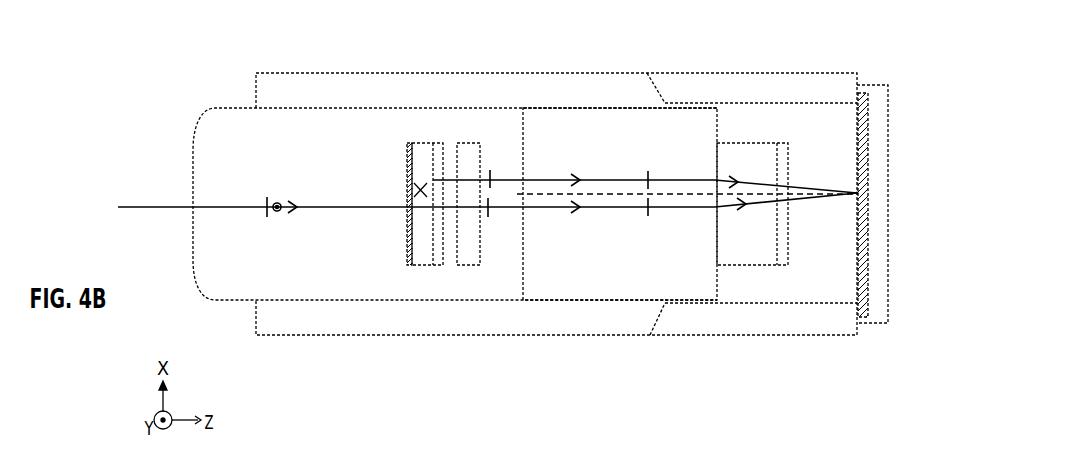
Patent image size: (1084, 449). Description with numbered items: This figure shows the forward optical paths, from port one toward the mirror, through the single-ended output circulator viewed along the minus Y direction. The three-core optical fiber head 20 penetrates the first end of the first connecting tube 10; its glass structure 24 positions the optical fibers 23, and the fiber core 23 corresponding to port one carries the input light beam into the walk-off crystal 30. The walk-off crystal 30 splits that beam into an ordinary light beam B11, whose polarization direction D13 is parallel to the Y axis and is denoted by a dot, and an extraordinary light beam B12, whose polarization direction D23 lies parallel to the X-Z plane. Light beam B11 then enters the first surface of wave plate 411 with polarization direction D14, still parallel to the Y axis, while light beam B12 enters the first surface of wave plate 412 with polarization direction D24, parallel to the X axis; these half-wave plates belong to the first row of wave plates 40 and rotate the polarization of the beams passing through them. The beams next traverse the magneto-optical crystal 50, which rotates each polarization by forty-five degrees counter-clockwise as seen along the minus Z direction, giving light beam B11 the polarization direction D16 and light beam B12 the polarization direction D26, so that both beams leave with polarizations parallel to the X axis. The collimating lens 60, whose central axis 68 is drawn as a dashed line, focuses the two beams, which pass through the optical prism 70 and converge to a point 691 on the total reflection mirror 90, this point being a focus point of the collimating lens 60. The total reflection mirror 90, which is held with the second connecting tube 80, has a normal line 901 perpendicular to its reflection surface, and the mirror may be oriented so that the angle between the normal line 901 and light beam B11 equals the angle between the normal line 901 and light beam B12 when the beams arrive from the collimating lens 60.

The first connecting tube 10 is at (387, 92).
The three-core optical fiber head 20 is at (302, 272).
The optical fibers 23 is at (233, 204).
The glass structure 24 is at (260, 145).
The walk-off crystal 30 is at (410, 270).
The wave plates 40 is at (437, 267).
The magneto-optical crystal 50 is at (470, 260).
The collimating lens 60 is at (560, 263).
The central axis 68 is at (615, 193).
The optical prism 70 is at (748, 252).
The second connecting tube 80 is at (775, 97).
The total reflection mirror 90 is at (878, 117).
The wave plate 411 is at (443, 240).
The wave plate 412 is at (440, 157).
The point 691 is at (860, 197).
The normal line 901 is at (758, 197).
The light beam B11 is at (418, 207).
The light beam B12 is at (430, 178).
The polarization direction D13 is at (414, 209).
The polarization direction D14 is at (441, 212).
The polarization direction D16 is at (494, 218).
The polarization direction D23 is at (410, 190).
The polarization direction D24 is at (433, 167).
The polarization direction D26 is at (493, 170).